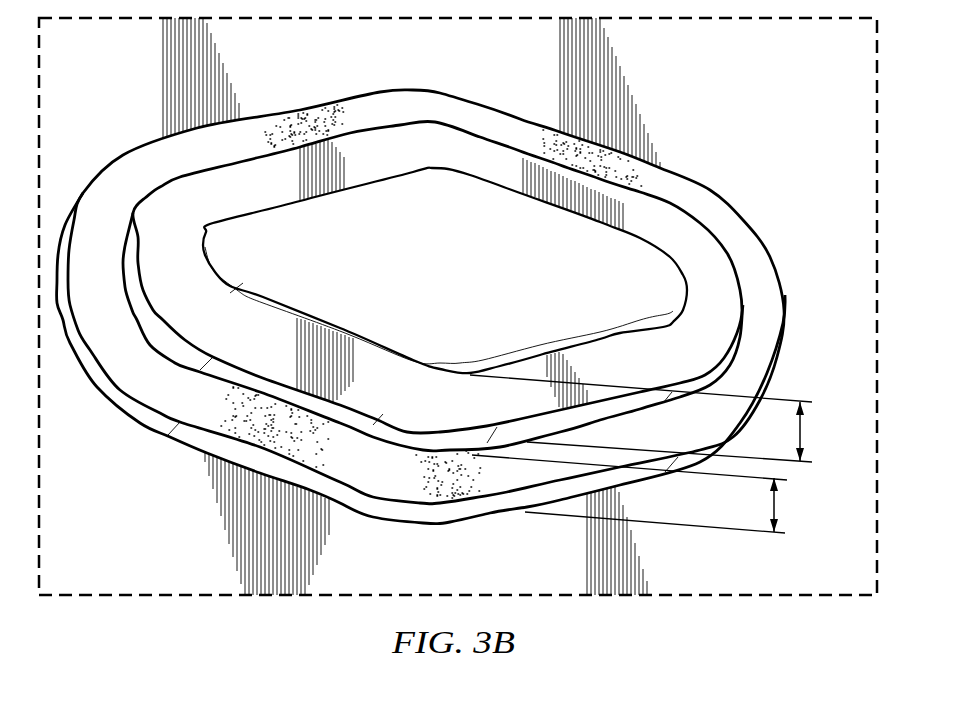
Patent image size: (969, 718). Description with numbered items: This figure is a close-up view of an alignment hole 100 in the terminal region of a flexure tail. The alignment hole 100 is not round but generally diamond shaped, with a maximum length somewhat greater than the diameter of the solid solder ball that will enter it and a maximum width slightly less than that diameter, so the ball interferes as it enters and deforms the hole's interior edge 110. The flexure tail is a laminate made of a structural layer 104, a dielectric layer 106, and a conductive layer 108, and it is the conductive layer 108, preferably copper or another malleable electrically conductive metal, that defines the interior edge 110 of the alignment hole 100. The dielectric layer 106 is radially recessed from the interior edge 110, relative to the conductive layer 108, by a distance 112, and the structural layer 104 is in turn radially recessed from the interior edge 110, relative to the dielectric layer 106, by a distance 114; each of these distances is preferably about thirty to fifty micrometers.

The alignment hole 100 is at (463, 285).
The structural layer 104 is at (113, 480).
The dielectric layer 106 is at (191, 397).
The conductive layer 108 is at (236, 330).
The interior edge 110 is at (268, 303).
The distance 112 is at (802, 430).
The distance 114 is at (776, 505).